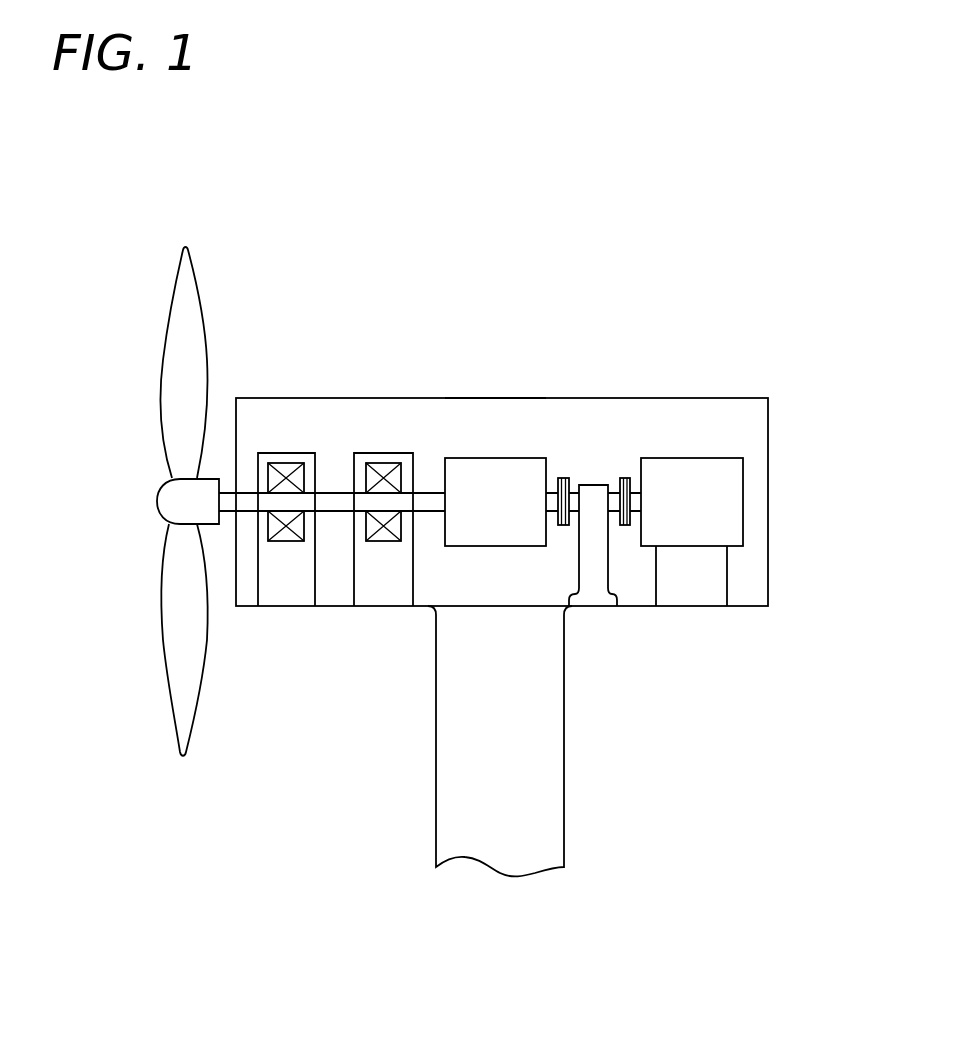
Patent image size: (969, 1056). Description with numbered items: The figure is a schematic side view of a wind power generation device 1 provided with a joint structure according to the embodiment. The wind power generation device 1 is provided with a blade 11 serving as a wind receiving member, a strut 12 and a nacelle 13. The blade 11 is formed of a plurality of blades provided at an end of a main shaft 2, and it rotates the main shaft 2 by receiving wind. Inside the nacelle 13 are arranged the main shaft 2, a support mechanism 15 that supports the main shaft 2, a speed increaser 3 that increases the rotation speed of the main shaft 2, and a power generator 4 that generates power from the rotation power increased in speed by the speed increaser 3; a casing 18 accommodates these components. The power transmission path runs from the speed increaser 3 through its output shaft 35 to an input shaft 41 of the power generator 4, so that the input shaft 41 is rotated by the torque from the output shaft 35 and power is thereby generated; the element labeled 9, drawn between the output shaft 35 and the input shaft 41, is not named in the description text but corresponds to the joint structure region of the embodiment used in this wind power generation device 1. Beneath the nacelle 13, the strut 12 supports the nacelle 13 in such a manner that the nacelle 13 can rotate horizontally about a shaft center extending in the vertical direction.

The wind power generation device 1 is at (767, 275).
The main shaft 2 is at (338, 490).
The speed increaser 3 is at (517, 468).
The power generator 4 is at (682, 470).
The support pedestal 9 is at (610, 465).
The blade 11 is at (172, 317).
The strut 12 is at (555, 740).
The nacelle 13 is at (580, 377).
The support mechanism 15 is at (297, 413).
The casing 18 is at (483, 398).
The output shaft 35 is at (573, 513).
The input shaft 41 is at (634, 515).